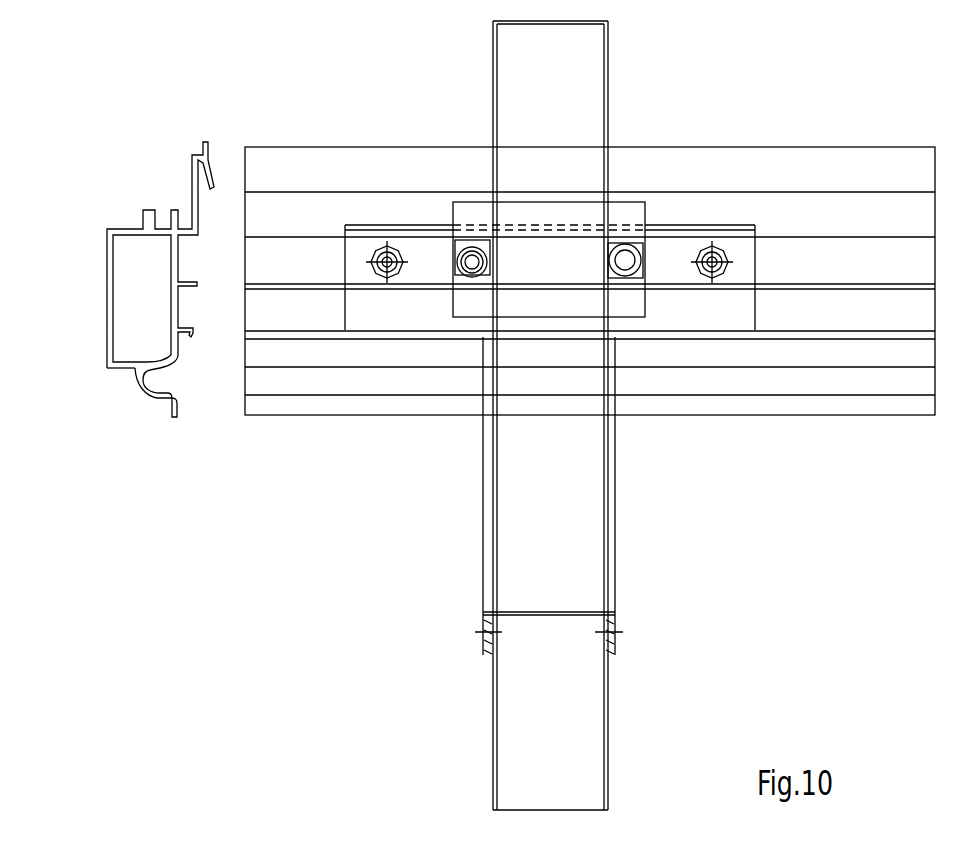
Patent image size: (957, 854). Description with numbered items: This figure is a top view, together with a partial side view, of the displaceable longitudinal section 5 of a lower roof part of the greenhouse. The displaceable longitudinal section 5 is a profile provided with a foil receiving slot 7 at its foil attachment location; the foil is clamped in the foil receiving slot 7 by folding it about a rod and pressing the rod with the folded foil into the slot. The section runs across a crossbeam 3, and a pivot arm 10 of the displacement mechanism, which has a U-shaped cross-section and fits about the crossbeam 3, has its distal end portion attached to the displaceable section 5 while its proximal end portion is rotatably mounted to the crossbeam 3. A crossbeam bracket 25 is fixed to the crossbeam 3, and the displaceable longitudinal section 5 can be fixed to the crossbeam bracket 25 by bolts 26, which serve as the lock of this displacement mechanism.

The crossbeam 3 is at (594, 721).
The displaceable longitudinal section 5 is at (107, 285).
The foil receiving slot 7 is at (153, 380).
The pivot arm 10 is at (596, 494).
The crossbeam bracket 25 is at (735, 232).
The bolt 26 is at (380, 243).